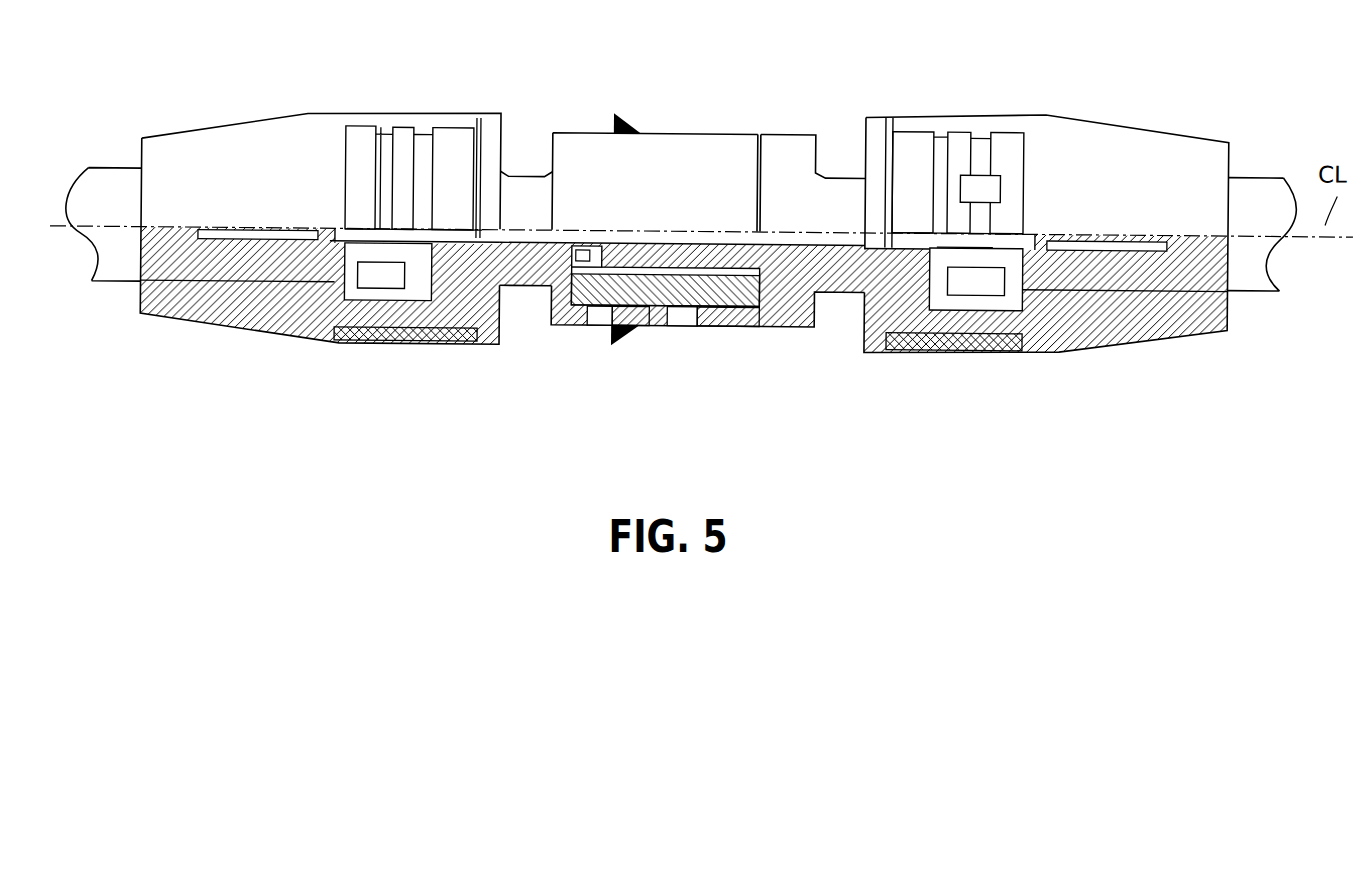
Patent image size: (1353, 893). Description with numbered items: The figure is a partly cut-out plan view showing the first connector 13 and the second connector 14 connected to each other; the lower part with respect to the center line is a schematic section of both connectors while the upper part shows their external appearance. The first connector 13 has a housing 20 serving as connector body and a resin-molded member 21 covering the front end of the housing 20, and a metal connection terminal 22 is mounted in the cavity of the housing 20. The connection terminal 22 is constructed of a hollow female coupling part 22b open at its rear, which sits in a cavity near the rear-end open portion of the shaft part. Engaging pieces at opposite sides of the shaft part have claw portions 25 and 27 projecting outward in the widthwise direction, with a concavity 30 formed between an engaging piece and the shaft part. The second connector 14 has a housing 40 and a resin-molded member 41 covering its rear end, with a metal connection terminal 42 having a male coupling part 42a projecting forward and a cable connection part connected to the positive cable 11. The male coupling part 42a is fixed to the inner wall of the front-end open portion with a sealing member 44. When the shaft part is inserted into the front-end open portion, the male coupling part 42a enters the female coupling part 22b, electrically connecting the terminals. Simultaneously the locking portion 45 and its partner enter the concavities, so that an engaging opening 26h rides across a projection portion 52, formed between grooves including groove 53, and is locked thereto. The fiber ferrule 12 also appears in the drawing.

The positive cable 11 is at (110, 170).
The optical fiber ferrule (right) 12 is at (1261, 173).
The first connector 13 is at (1030, 112).
The second connector 14 is at (389, 115).
The housing 20 is at (865, 114).
The resin-molded member 21 is at (1137, 125).
The connection terminal 22 is at (988, 350).
The female coupling part 22b is at (773, 232).
The claw portion 25 is at (616, 114).
The engaging opening 26h is at (680, 327).
The claw portion 27 is at (624, 340).
The concavity 30 is at (732, 327).
The housing 40 is at (502, 117).
The resin-molded member 41 is at (233, 128).
The connection terminal 42 is at (410, 346).
The male coupling part 42a is at (675, 230).
The sealing member 44 is at (592, 241).
The locking portion 45 is at (718, 327).
The projection portion 52 is at (650, 327).
The groove 53 is at (592, 328).